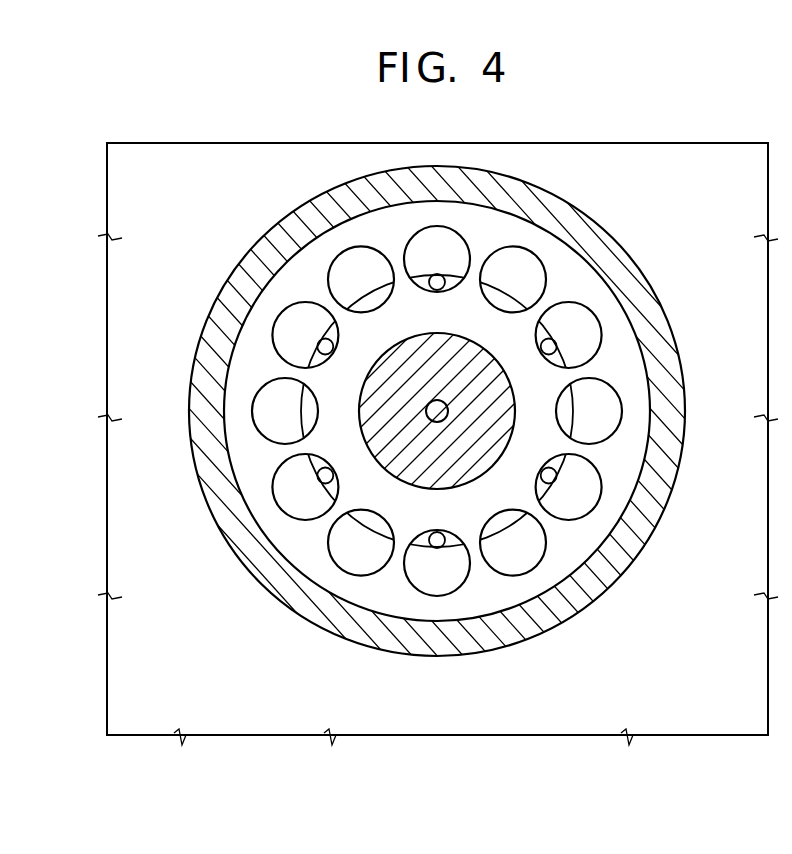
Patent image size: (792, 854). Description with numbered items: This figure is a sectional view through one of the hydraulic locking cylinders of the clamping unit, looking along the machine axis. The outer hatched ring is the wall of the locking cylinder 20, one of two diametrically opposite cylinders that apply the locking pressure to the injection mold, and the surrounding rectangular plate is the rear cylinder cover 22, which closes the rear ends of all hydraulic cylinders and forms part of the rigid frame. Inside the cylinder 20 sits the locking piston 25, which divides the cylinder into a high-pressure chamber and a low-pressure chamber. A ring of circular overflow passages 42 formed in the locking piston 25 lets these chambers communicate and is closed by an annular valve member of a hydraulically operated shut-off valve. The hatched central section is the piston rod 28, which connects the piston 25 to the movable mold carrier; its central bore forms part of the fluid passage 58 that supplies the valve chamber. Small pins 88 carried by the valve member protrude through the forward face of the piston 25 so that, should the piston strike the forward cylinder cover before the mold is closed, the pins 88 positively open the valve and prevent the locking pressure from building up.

The hydraulic locking cylinder 20 is at (396, 368).
The rear cylinder cover 22 is at (438, 403).
The locking piston 25 is at (437, 495).
The piston rod 28 is at (411, 345).
The overflow passage 42 is at (437, 508).
The fluid passage 58 is at (292, 474).
The pin 88 is at (376, 532).